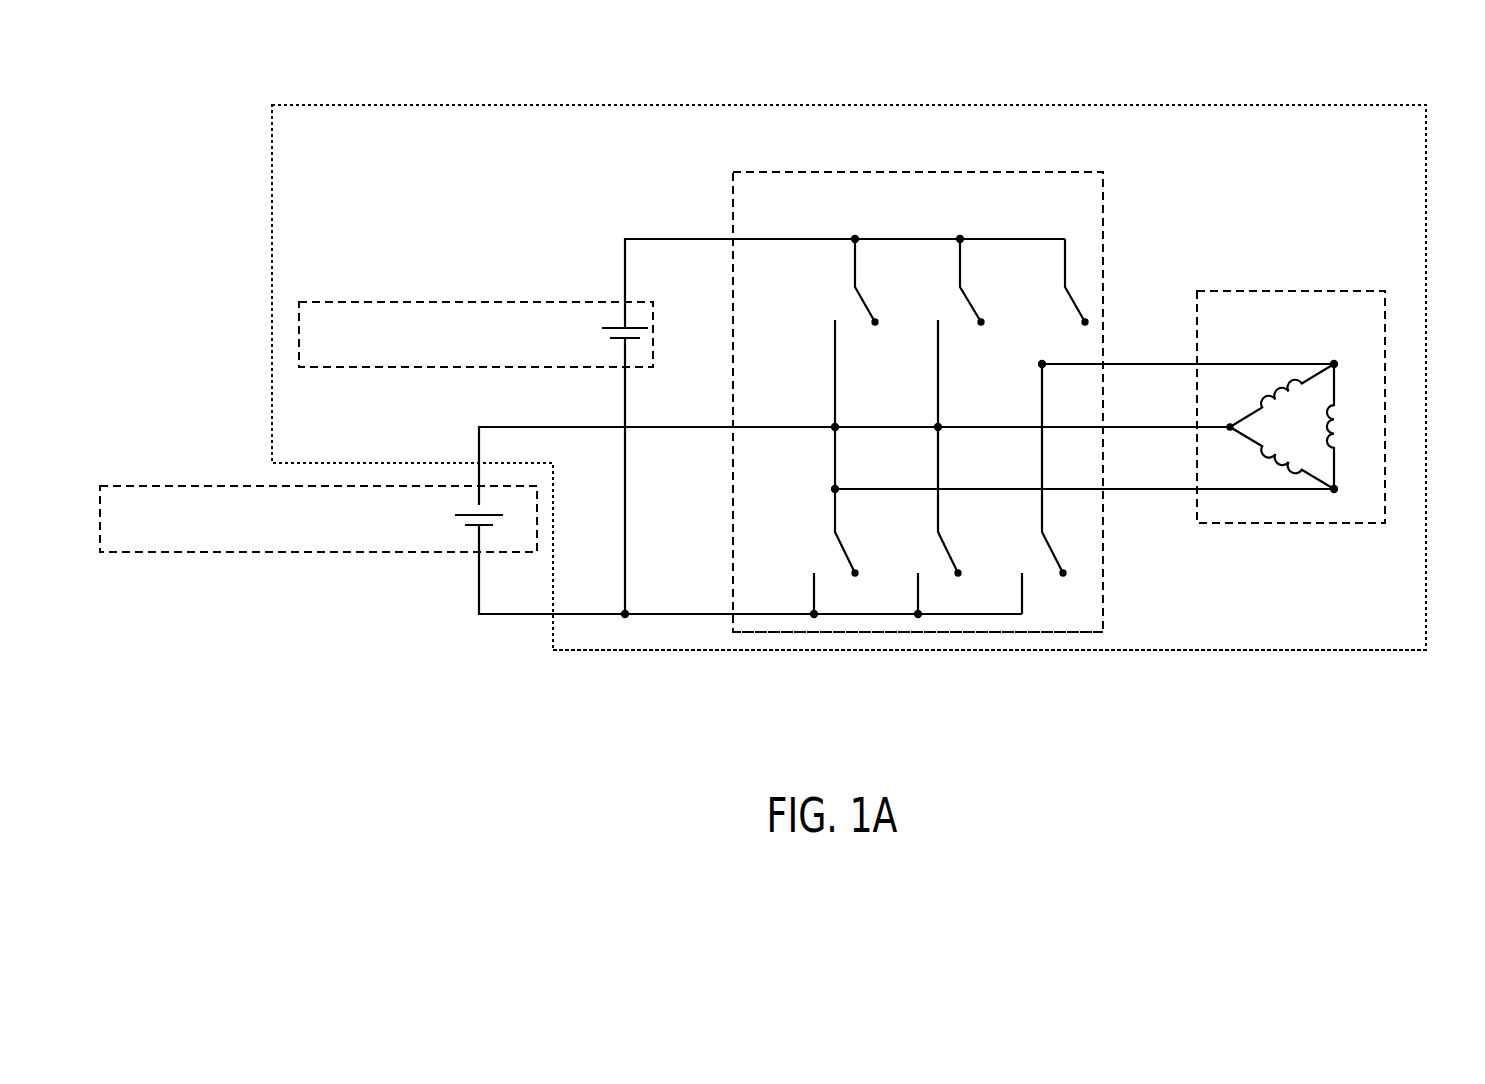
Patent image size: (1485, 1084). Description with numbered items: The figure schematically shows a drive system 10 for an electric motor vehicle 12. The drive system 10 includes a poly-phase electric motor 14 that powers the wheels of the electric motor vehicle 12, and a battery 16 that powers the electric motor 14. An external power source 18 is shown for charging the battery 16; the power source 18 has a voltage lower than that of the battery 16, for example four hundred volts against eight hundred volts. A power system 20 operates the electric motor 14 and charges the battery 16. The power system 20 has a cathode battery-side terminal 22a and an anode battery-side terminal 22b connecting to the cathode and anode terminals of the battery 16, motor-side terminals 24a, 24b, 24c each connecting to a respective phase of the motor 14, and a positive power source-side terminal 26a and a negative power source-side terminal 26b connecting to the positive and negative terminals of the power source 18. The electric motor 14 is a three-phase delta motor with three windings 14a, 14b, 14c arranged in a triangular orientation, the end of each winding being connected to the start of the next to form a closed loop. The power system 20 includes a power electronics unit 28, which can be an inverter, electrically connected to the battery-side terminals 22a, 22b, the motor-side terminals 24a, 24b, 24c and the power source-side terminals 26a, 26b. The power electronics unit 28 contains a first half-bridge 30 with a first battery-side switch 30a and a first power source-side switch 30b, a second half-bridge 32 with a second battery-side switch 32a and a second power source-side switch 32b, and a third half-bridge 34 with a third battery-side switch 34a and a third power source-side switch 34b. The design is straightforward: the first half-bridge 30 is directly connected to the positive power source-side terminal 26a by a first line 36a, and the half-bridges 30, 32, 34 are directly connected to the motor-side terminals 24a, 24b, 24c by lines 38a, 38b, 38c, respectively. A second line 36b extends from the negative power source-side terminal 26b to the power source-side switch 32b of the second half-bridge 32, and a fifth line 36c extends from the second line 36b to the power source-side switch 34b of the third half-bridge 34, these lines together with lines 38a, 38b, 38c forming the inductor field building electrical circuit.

The drive system 10 is at (410, 124).
The electric motor vehicle 12 is at (857, 651).
The poly-phase electric motor 14 is at (1280, 290).
The winding 14a is at (1280, 455).
The winding 14b is at (1268, 397).
The winding 14c is at (1332, 428).
The battery 16 is at (464, 301).
The external power source 18 is at (200, 485).
The power system 20 is at (925, 171).
The cathode battery-side terminal 22a is at (606, 288).
The anode battery-side terminal 22b is at (617, 380).
The first motor-side terminal 24a is at (1182, 483).
The second motor-side terminal 24b is at (1182, 421).
The third motor-side terminal 24c is at (1182, 357).
The positive power source-side terminal 26a is at (470, 444).
The negative power source-side terminal 26b is at (541, 623).
The power electronics unit 28 is at (1090, 633).
The first half-bridge 30 is at (814, 624).
The first battery-side switch 30a is at (866, 298).
The first power source-side switch 30b is at (848, 548).
The second half-bridge 32 is at (918, 624).
The second battery-side switch 32a is at (971, 298).
The second power source-side switch 32b is at (950, 545).
The third half-bridge 34 is at (1022, 624).
The third battery-side switch 34a is at (1076, 298).
The third power source-side switch 34b is at (1053, 545).
The first line 36a is at (660, 430).
The second line 36b is at (670, 616).
The fifth line 36c is at (957, 616).
The fourth line 38a is at (1168, 491).
The third line 38b is at (1105, 430).
The sixth line 38c is at (1052, 366).